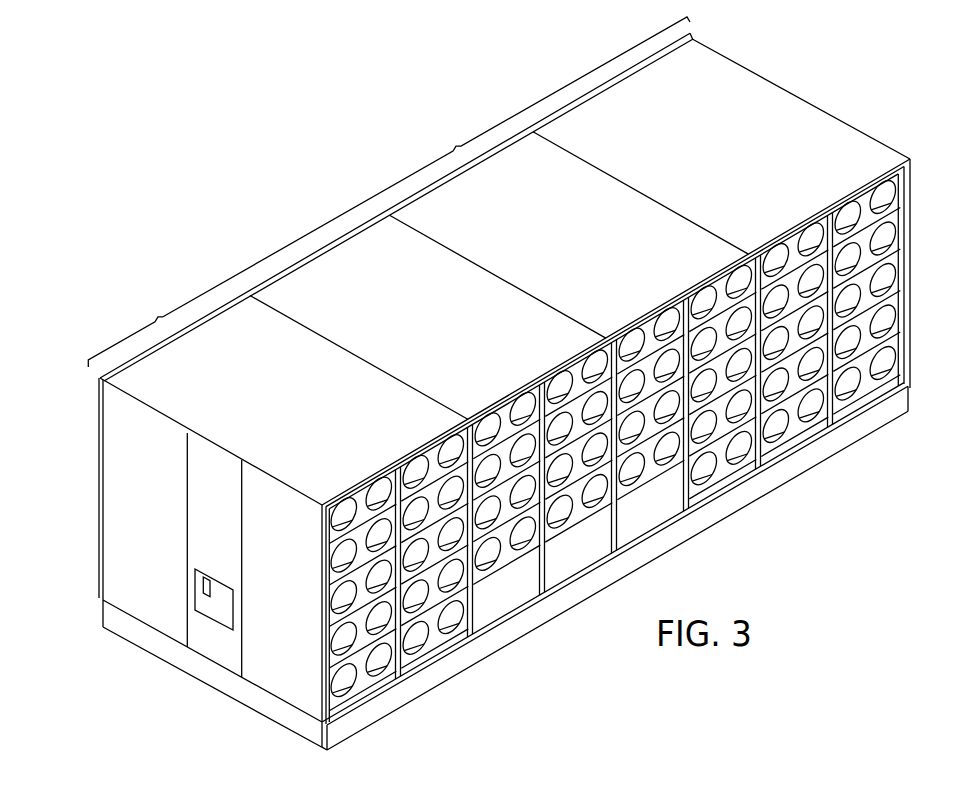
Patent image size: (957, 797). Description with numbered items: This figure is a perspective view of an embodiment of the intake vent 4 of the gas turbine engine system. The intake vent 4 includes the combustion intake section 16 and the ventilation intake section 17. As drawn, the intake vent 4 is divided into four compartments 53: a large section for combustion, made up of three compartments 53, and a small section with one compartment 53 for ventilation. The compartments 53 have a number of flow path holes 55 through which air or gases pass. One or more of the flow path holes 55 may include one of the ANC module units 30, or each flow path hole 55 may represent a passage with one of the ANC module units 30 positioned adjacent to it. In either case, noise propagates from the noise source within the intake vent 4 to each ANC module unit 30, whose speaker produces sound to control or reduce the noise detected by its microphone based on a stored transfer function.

The intake vent 4 is at (347, 77).
The combustion intake section 16 is at (426, 167).
The ventilation intake section 17 is at (127, 327).
The compartment 53 is at (350, 432).
The flow path hole 55 is at (453, 450).
The ANC module unit 30 is at (718, 443).